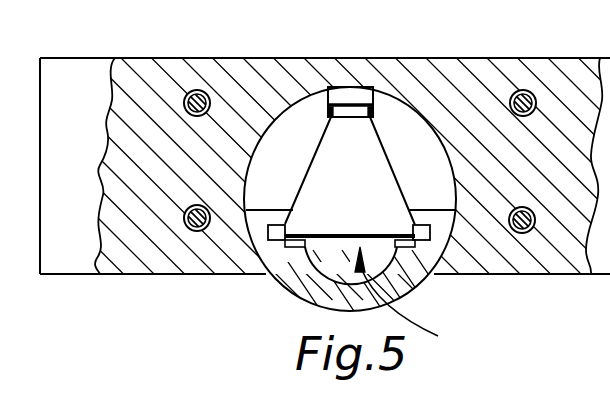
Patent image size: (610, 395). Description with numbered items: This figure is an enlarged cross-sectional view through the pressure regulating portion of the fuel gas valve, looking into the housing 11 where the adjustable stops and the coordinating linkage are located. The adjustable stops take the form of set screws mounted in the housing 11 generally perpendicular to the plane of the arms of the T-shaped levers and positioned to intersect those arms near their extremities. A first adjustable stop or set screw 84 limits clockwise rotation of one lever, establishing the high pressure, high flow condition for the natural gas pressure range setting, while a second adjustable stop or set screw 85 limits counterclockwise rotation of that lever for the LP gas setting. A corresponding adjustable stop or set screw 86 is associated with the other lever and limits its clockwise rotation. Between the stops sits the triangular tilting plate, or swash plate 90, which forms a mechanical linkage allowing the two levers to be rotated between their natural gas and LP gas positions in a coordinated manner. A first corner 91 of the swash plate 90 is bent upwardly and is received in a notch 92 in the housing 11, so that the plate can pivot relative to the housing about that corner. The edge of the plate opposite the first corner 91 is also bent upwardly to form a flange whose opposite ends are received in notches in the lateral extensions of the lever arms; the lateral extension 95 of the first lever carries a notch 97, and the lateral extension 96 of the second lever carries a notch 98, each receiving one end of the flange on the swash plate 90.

The housing 11 is at (518, 58).
The first adjustable stop or set screw 84 is at (197, 231).
The second adjustable stop or set screw 85 is at (197, 90).
The adjustable stop or set screw 86 is at (523, 233).
The triangular tilting plate or swash plate 90 is at (379, 235).
The first corner 91 is at (376, 100).
The notch 92 is at (326, 102).
The lateral extension 95 is at (265, 210).
The lateral extension 96 is at (422, 210).
The notch 97 is at (302, 250).
The notch 98 is at (430, 274).